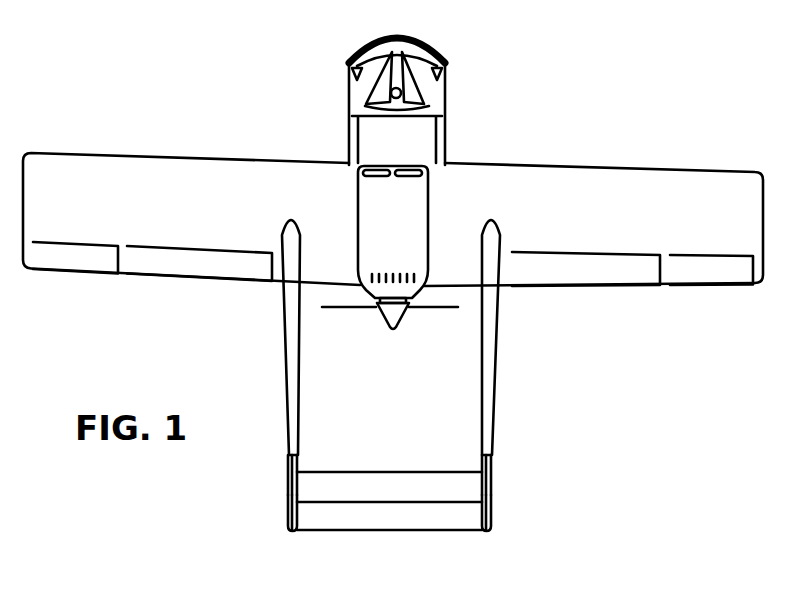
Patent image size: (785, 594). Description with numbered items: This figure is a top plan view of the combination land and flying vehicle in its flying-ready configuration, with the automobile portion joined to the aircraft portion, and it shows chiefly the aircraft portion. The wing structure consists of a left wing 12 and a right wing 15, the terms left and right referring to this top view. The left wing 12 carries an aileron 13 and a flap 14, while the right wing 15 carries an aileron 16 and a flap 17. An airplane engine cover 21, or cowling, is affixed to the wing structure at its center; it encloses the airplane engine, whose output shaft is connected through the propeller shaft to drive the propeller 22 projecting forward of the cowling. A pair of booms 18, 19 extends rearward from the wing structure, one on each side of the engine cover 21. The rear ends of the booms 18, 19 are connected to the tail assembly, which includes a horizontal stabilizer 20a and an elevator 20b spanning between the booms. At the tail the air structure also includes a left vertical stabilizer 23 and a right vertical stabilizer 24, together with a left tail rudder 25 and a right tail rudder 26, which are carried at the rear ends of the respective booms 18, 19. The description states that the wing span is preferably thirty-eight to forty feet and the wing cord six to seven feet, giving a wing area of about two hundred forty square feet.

The left wing 12 is at (157, 156).
The right wing 15 is at (614, 166).
The aileron 13 is at (67, 274).
The flap 14 is at (186, 285).
The flap 17 is at (578, 289).
The aileron 16 is at (707, 290).
The airplane engine cover 21 is at (428, 212).
The propeller 22 is at (351, 309).
The boom 18 is at (298, 397).
The boom 19 is at (493, 397).
The horizontal stabilizer 20a is at (378, 471).
The elevator 20b is at (395, 531).
The left vertical stabilizer 23 is at (287, 483).
The right vertical stabilizer 24 is at (494, 482).
The left tail rudder 25 is at (288, 516).
The right tail rudder 26 is at (494, 517).